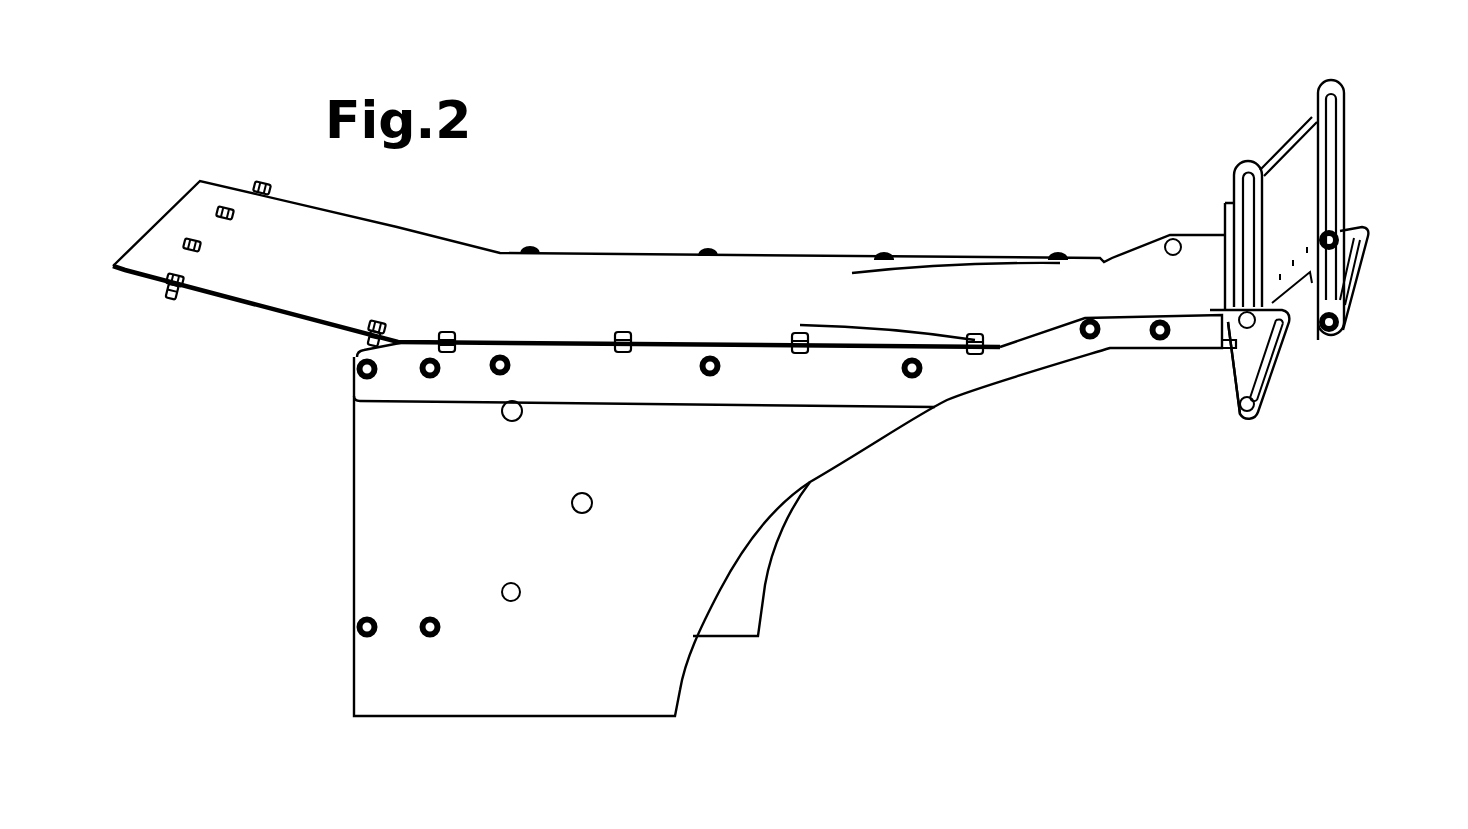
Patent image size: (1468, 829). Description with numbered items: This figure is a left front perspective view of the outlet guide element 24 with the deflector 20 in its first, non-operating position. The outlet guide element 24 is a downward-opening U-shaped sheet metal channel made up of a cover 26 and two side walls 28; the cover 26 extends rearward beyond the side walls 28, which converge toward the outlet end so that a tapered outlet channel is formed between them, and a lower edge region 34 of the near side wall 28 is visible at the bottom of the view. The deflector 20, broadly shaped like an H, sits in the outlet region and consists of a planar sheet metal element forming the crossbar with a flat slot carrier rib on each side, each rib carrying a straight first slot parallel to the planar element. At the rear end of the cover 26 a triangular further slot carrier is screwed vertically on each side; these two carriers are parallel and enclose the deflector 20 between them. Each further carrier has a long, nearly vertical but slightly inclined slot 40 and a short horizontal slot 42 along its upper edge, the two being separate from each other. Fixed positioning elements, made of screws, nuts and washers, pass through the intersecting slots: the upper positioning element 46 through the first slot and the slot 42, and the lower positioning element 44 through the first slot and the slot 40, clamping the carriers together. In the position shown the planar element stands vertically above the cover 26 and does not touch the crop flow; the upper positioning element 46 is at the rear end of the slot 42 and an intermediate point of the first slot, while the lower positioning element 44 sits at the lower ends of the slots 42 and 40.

The deflector 20 is at (1173, 122).
The outlet guide element 24 is at (722, 160).
The cover 26 is at (532, 323).
The side walls 28 is at (596, 603).
The lip 34 is at (739, 583).
The second slot 40 is at (1283, 355).
The third slot 42 is at (1227, 348).
The lower positioning element 44 is at (1240, 410).
The upper positioning element 46 is at (1343, 238).